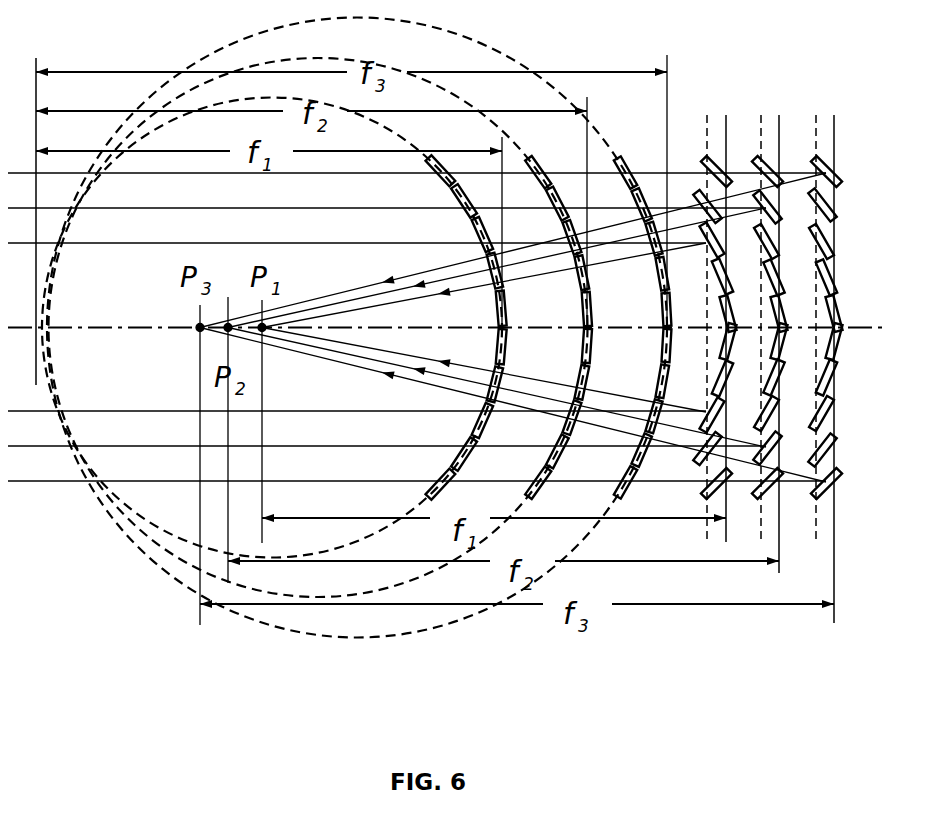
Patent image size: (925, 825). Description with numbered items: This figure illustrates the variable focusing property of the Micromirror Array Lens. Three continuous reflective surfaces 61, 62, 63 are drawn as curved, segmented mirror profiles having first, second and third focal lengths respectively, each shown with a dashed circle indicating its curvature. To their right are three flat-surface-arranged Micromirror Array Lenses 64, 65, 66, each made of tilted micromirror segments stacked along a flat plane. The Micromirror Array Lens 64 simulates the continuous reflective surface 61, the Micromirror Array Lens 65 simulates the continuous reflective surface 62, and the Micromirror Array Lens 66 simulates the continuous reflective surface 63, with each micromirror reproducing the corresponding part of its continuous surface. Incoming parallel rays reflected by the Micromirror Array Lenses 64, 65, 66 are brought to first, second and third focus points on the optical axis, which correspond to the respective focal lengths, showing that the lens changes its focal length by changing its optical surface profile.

The continuous reflective surface 61 is at (445, 495).
The continuous reflective surface 62 is at (527, 500).
The continuous reflective surface 63 is at (633, 492).
The Micromirror Array Lens 64 is at (713, 538).
The Micromirror Array Lens 65 is at (769, 522).
The Micromirror Array Lens 66 is at (830, 503).